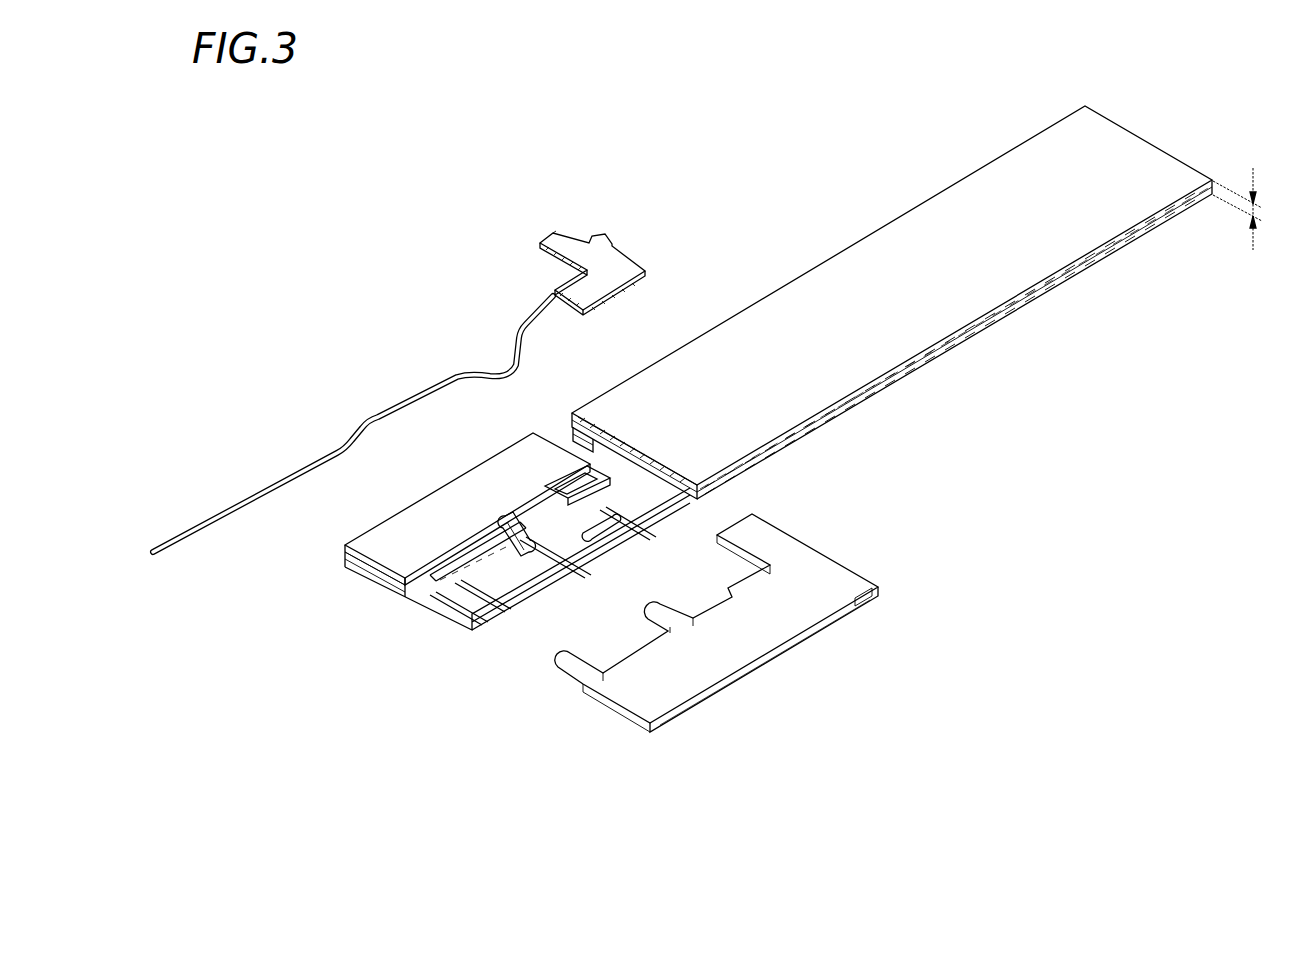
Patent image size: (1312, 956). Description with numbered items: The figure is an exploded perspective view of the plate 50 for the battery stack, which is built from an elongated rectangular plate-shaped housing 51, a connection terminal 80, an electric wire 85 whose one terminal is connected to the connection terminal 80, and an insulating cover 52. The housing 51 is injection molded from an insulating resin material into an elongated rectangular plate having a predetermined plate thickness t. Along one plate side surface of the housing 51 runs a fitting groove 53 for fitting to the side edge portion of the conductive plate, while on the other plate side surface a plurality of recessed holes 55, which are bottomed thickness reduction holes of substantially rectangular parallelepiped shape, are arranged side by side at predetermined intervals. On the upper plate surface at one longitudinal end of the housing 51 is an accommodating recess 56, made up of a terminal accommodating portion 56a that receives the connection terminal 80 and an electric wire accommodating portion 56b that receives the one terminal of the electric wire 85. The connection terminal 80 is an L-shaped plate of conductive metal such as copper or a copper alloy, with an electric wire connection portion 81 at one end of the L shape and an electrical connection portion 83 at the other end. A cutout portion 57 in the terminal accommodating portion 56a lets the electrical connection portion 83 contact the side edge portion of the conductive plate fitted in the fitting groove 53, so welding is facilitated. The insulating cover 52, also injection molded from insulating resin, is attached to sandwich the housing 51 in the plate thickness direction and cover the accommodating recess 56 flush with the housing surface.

The plate for the battery stack 50 is at (781, 100).
The housing 51 is at (933, 220).
The insulating cover 52 is at (838, 546).
The fitting groove 53 is at (570, 412).
The recessed holes 55 is at (1110, 265).
The accommodating recess 56 is at (550, 713).
The terminal accommodating portion 56a is at (597, 452).
The electric wire accommodating portion 56b is at (518, 552).
The cutout portion 57 is at (527, 428).
The connection terminal 80 is at (630, 262).
The electric wire connection portion 81 is at (592, 293).
The electrical connection portion 83 is at (561, 228).
The electric wire 85 is at (317, 457).
The plate thickness t is at (1247, 209).